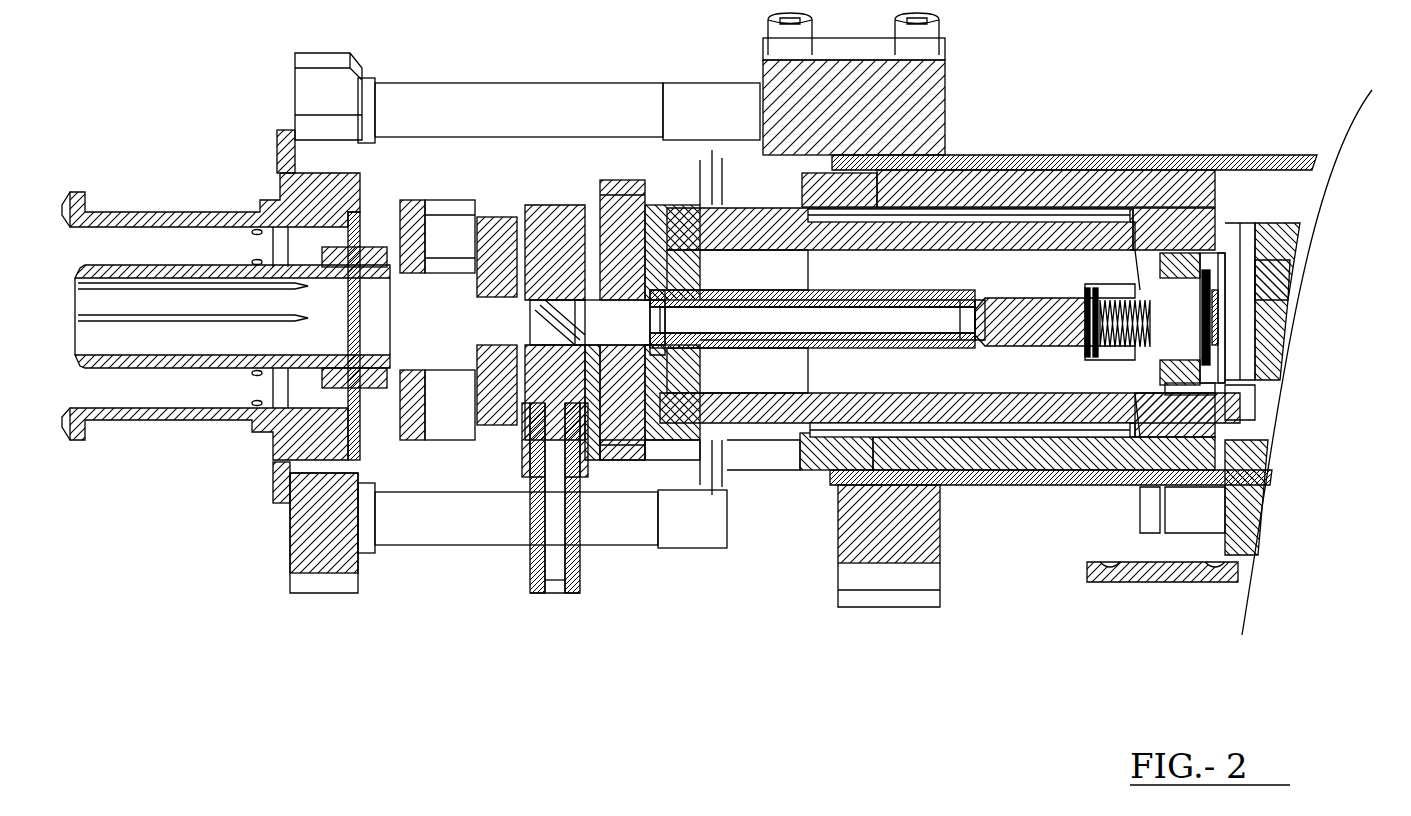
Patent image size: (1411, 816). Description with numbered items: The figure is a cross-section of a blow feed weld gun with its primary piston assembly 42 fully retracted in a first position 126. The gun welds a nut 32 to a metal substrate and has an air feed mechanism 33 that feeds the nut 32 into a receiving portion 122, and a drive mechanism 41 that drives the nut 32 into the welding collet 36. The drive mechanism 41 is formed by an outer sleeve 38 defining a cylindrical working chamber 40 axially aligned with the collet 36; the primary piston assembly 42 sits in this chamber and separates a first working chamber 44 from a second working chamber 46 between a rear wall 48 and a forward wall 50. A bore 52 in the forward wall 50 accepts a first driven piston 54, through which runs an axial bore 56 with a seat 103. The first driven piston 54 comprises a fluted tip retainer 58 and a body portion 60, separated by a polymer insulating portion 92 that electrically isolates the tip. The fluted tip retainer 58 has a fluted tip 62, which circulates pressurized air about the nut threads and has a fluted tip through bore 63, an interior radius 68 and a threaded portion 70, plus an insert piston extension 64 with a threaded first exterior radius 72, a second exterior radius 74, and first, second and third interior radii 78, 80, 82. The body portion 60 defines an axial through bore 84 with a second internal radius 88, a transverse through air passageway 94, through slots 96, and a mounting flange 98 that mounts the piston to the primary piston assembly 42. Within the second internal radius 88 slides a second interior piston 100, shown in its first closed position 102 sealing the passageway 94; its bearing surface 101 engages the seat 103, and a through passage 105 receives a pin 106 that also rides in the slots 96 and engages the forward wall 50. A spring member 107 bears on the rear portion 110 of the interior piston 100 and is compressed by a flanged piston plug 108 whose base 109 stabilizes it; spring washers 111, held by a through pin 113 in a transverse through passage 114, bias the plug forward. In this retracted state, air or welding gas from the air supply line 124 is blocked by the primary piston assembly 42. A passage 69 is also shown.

The nut 32 is at (430, 380).
The air feed mechanism 33 is at (442, 242).
The welding collet 36 is at (155, 268).
The outer sleeve 38 is at (726, 500).
The cylindrical working chamber 40 is at (1047, 205).
The drive mechanism 41 is at (770, 300).
The primary piston assembly 42 is at (1225, 260).
The first working chamber 44 is at (978, 205).
The second working chamber 46 is at (1258, 305).
The rear wall 48 is at (1258, 290).
The forward wall 50 is at (703, 208).
The bore 52 is at (676, 380).
The first driven piston 54 is at (745, 450).
The axial bore 56 is at (825, 325).
The fluted tip retainer 58 is at (958, 470).
The body portion 60 is at (865, 343).
The fluted tip 62 is at (522, 290).
The fluted tip through bore 63 is at (625, 300).
The insert piston extension 64 is at (590, 300).
The interior radius 68 is at (665, 455).
The passage 69 is at (608, 470).
The threaded portion 70 is at (690, 345).
The threaded first exterior radius 72 is at (535, 480).
The second exterior radius 74 is at (625, 455).
The first interior radius 78 is at (523, 405).
The second interior radius 80 is at (600, 450).
The third interior radius 82 is at (745, 248).
The axial through bore 84 is at (960, 315).
The second internal radius 88 is at (1200, 210).
The polymer insulating portion 92 is at (680, 292).
The transverse through air passageway 94 is at (982, 295).
The through slots 96 is at (1110, 300).
The mounting flange 98 is at (1240, 450).
The second interior piston 100 is at (1045, 340).
The bearing surface 101 is at (955, 240).
The first closed position 102 is at (1030, 348).
The seat 103 is at (968, 345).
The through passage 105 is at (1090, 350).
The pin 106 is at (1118, 405).
The spring member 107 is at (1212, 320).
The flanged piston plug 108 is at (1222, 282).
The base 109 is at (1225, 400).
The rear portion 110 is at (1225, 355).
The spring washers 111 is at (1220, 340).
The through pin 113 is at (1195, 265).
The transverse through passage 114 is at (1225, 375).
The receiving portion 122 is at (382, 256).
The air supply line 124 is at (552, 575).
The first position 126 is at (1132, 530).